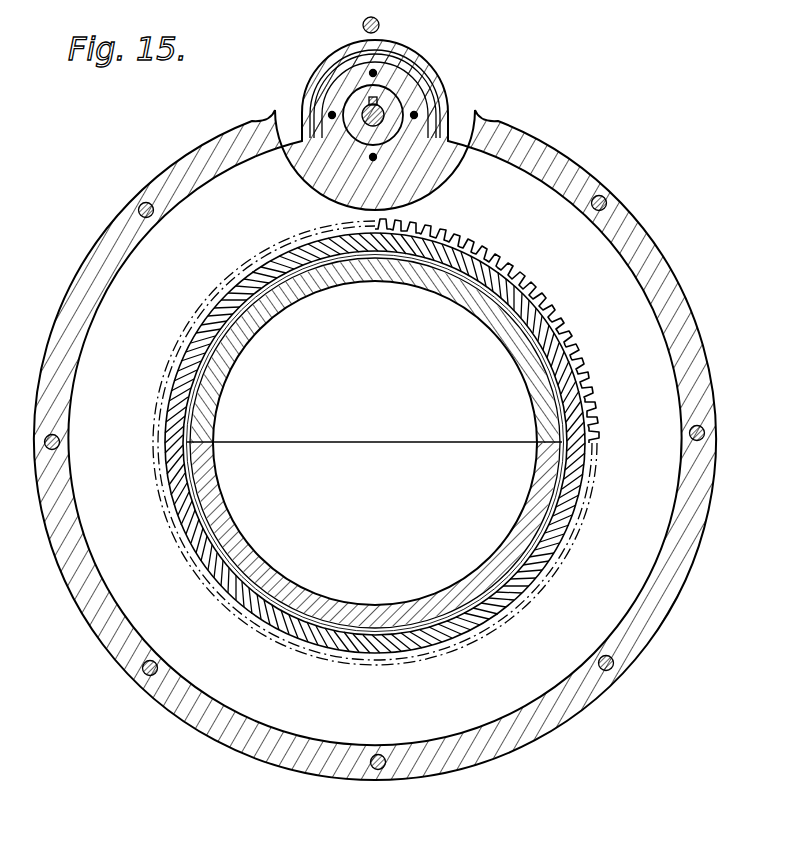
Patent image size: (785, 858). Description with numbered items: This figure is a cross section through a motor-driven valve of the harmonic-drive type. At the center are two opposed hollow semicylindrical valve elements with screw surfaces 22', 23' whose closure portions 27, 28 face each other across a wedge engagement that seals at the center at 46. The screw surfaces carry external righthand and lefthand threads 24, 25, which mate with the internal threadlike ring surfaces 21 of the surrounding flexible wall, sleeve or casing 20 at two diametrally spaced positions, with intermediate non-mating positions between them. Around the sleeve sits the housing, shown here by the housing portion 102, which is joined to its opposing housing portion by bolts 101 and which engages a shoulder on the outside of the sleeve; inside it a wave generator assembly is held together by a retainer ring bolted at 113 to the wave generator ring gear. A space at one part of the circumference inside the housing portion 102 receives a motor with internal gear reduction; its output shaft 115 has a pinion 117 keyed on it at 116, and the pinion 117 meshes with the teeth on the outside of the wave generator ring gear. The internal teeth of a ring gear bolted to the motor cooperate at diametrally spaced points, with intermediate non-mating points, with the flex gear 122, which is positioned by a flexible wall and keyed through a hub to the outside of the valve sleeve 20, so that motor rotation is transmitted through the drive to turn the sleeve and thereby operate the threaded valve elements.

The flexible wall, sleeve or casing 20 is at (270, 273).
The internal threadlike ring surfaces 21 is at (266, 283).
The screw surface 22' is at (375, 351).
The screw surface 23' is at (375, 535).
The righthand thread 24 is at (380, 256).
The lefthand thread 25 is at (374, 626).
The closure portion 27 is at (344, 392).
The closure portion 28 is at (344, 537).
The wedge engagement sealing 46 is at (430, 441).
The bolts 101 is at (607, 203).
The housing portion 102 is at (594, 176).
The bolting 113 is at (533, 280).
The output shaft 115 is at (367, 120).
The key 116 is at (376, 98).
The pinion 117 is at (392, 108).
The flex gear 122 is at (479, 246).